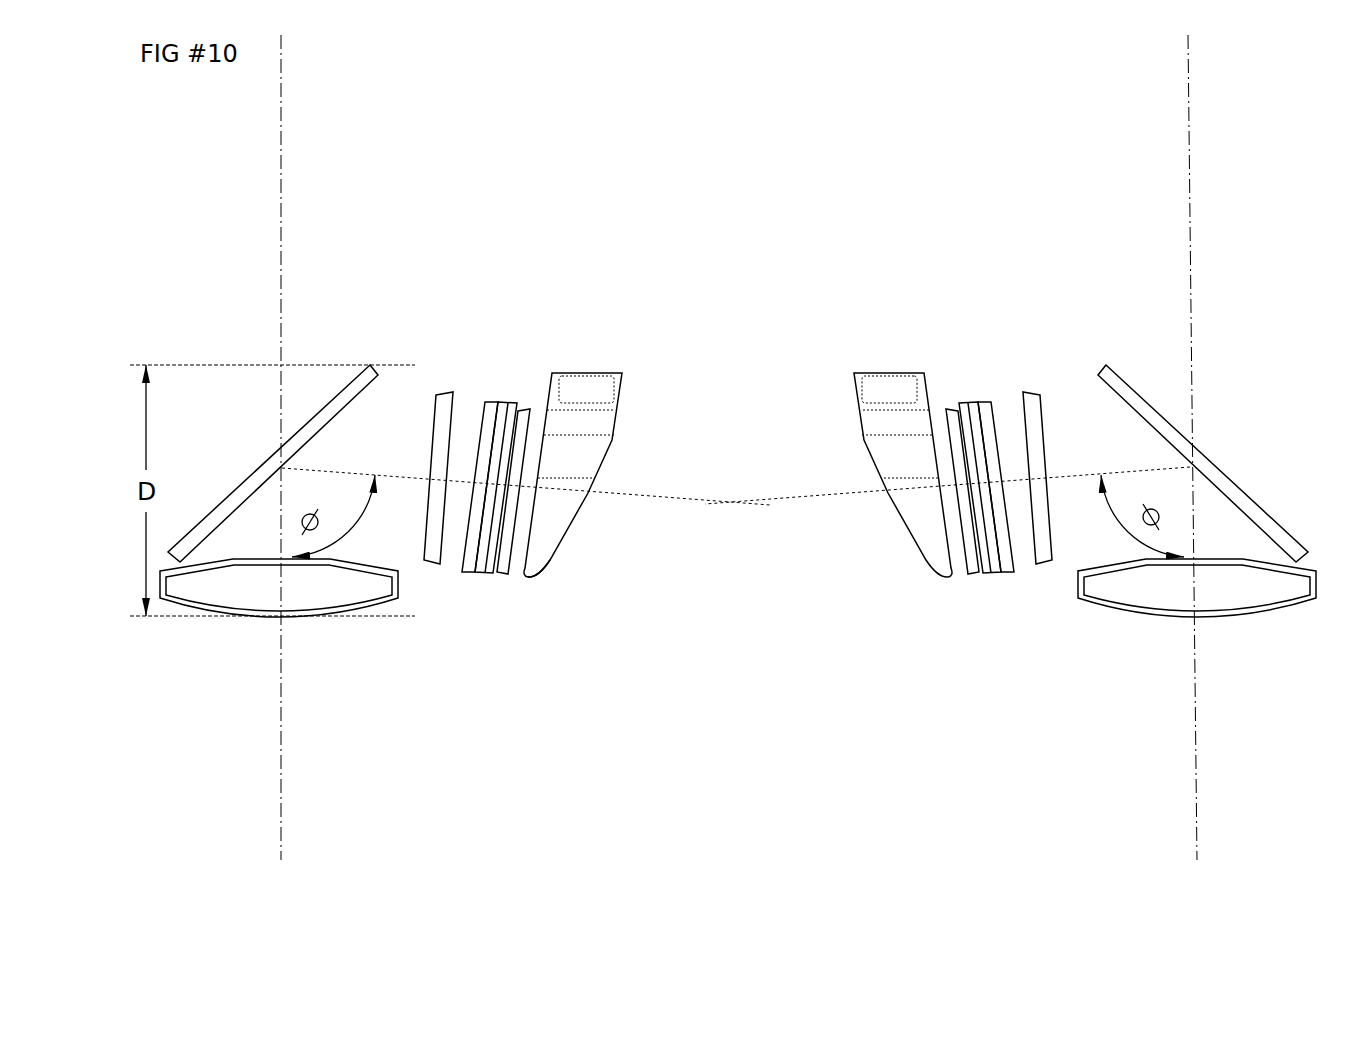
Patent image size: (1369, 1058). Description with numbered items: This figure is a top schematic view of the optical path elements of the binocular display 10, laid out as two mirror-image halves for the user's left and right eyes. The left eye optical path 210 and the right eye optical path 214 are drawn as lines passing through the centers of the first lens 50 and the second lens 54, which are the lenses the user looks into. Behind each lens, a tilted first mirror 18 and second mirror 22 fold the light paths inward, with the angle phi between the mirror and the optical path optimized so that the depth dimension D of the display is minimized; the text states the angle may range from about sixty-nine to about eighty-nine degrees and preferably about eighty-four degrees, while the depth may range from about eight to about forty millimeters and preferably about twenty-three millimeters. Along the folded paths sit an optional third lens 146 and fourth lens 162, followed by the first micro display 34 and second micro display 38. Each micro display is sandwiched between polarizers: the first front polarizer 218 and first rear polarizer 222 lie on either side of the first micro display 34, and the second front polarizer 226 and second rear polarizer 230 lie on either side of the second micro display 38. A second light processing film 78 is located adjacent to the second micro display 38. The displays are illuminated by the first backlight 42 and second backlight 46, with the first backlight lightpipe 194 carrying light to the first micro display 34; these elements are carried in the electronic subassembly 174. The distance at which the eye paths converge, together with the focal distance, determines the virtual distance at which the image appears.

The binocular display 10 is at (805, 296).
The first mirror 18 is at (268, 463).
The second mirror 22 is at (1211, 463).
The first micro display 34 is at (467, 469).
The second micro display 38 is at (1007, 444).
The first backlight 42 is at (557, 315).
The second backlight 46 is at (860, 408).
The first lens 50 is at (279, 676).
The second lens 54 is at (1197, 654).
The second light processing film 78 is at (926, 405).
The third lens 146 is at (392, 441).
The fourth lens 162 is at (1090, 418).
The electronic subassembly 174 is at (557, 560).
The first backlight lightpipe 194 is at (591, 592).
The left eye optical path 210 is at (332, 449).
The right eye optical path 214 is at (1137, 447).
The first front polarizer 218 is at (429, 419).
The first rear polarizer 222 is at (462, 373).
The second front polarizer 226 is at (1051, 537).
The second rear polarizer 230 is at (945, 535).